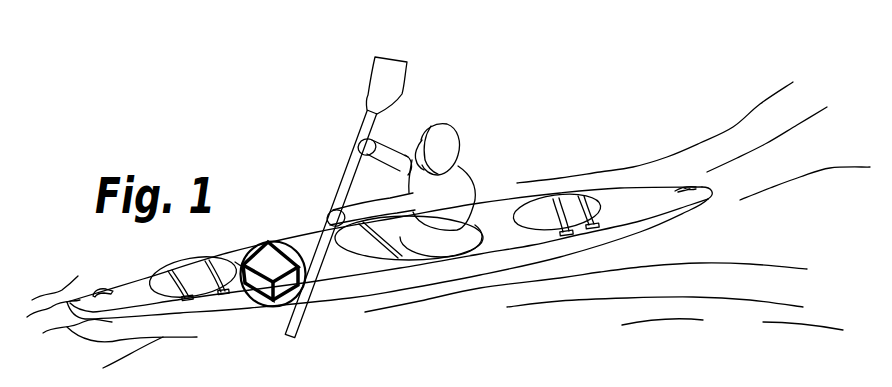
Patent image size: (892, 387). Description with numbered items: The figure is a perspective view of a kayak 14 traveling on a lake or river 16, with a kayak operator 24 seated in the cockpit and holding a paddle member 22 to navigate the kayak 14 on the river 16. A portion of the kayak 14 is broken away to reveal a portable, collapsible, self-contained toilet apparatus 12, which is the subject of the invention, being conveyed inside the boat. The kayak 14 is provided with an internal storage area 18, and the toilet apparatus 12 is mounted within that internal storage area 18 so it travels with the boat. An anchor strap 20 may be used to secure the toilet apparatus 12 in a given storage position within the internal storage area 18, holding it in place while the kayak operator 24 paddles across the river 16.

The portable, collapsible, self-contained toilet apparatus 12 is at (257, 243).
The kayak 14 is at (650, 231).
The lake or river 16 is at (750, 334).
The internal storage area 18 is at (255, 309).
The anchor strap 20 is at (555, 198).
The paddle member 22 is at (395, 82).
The kayak operator 24 is at (470, 186).